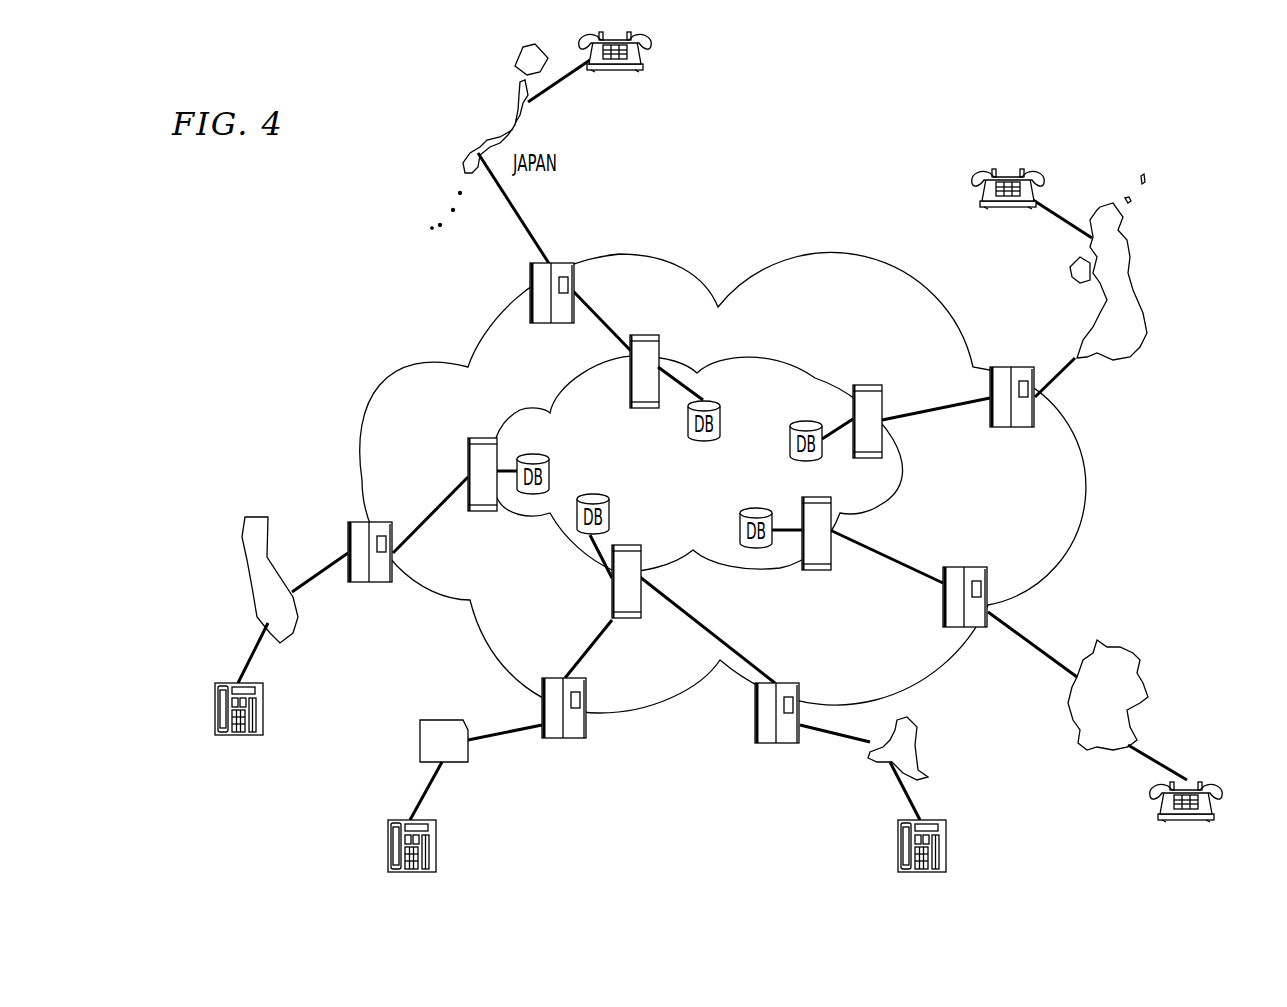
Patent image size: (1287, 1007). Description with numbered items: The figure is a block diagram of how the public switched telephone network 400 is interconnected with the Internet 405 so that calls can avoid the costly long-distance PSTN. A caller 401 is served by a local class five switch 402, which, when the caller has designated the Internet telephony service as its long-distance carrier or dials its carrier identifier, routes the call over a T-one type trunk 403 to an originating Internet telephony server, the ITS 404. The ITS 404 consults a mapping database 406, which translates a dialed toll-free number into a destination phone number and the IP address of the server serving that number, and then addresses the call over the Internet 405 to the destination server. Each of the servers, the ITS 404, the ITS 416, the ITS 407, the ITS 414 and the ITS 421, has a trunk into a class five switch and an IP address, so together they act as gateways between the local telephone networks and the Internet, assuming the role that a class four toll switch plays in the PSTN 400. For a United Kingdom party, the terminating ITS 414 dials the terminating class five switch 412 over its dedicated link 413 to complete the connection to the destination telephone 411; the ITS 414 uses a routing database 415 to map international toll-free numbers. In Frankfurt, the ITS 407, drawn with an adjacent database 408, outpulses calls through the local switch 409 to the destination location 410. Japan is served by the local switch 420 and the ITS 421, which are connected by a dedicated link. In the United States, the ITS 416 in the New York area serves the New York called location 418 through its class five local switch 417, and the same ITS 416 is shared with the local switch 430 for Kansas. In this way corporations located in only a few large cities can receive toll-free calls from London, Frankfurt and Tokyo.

The public switched telephone network 400 is at (723, 483).
The caller 401 is at (215, 708).
The local class 5 switch 402 is at (348, 538).
The T1 trunk 403 is at (437, 503).
The originating Internet telephony server (ITS) 404 is at (480, 438).
The Internet 405 is at (697, 463).
The mapping database 406 is at (543, 447).
The destination serving Internet telephony server (ITS) 407 is at (803, 497).
The database 408 is at (740, 525).
The local switch 409 is at (943, 612).
The destination location 410 is at (1227, 787).
The destination telephone 411 is at (970, 178).
The terminating local class 5 switch 412 is at (1018, 367).
The trunk line 413 is at (935, 407).
The terminating Internet telephony server (ITS) 414 is at (865, 383).
The routing database 415 is at (790, 440).
The Internet telephony server (ITS) 416 is at (625, 543).
The class 5 local switch 417 is at (755, 710).
The called location 418 is at (898, 843).
The local switch 420 is at (558, 260).
The Internet telephony server (ITS) 421 is at (640, 335).
The local switch 430 is at (542, 707).